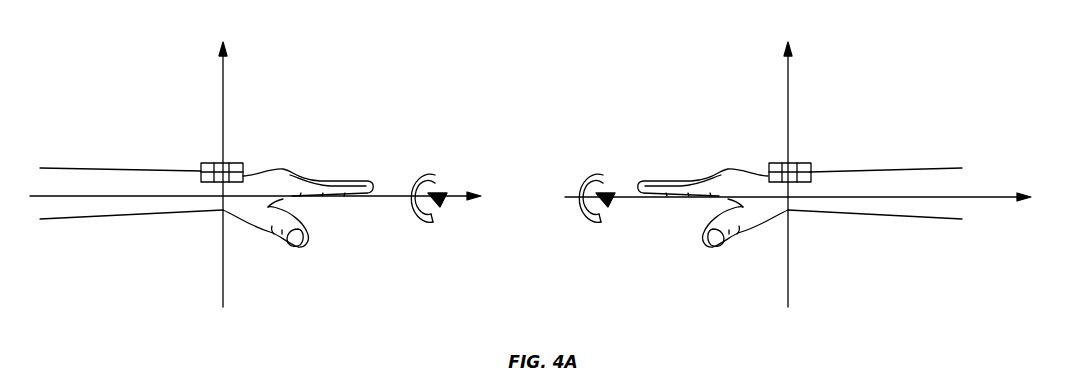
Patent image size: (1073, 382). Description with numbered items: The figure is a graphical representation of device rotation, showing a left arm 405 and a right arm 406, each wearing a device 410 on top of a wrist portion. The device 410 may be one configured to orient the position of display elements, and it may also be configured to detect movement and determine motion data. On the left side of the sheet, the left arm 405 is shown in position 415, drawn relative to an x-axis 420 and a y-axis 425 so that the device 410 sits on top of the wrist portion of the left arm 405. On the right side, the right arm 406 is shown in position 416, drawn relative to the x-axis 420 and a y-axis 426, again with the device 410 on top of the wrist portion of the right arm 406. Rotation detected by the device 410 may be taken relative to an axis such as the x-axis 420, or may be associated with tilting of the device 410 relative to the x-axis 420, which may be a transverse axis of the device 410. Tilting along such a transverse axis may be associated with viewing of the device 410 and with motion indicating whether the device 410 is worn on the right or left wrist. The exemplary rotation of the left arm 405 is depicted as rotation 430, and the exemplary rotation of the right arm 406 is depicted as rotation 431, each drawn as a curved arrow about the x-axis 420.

The left arm 405 is at (132, 167).
The right arm 406 is at (900, 167).
The device 410 is at (234, 162).
The position 415 is at (90, 90).
The position 416 is at (684, 75).
The x-axis 420 is at (470, 203).
The y-axis 425 is at (223, 90).
The y-axis 426 is at (788, 93).
The rotation 430 is at (423, 175).
The rotation 431 is at (591, 175).